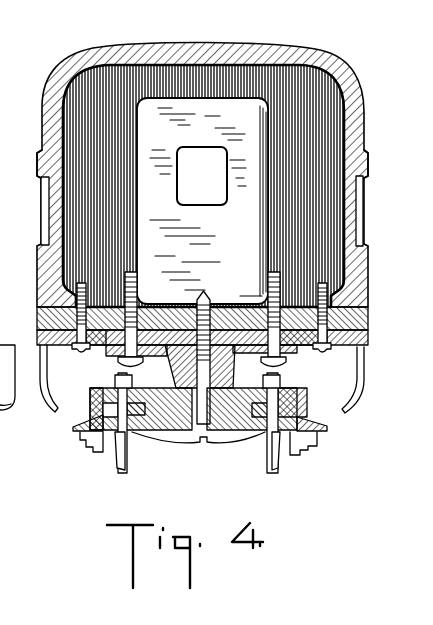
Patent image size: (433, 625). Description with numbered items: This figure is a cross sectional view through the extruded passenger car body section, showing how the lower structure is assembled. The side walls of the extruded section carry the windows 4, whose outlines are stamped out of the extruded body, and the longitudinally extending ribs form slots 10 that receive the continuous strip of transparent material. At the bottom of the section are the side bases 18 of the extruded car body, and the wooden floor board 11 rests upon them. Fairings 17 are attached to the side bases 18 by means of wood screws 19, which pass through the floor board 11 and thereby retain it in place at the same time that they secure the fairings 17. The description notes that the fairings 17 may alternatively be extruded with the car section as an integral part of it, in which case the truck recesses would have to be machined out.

The windows 4 is at (43, 213).
The slots 10 is at (43, 152).
The floor board 11 is at (42, 311).
The fairings 17 is at (44, 397).
The side bases 18 is at (40, 338).
The wood screws 19 is at (77, 300).